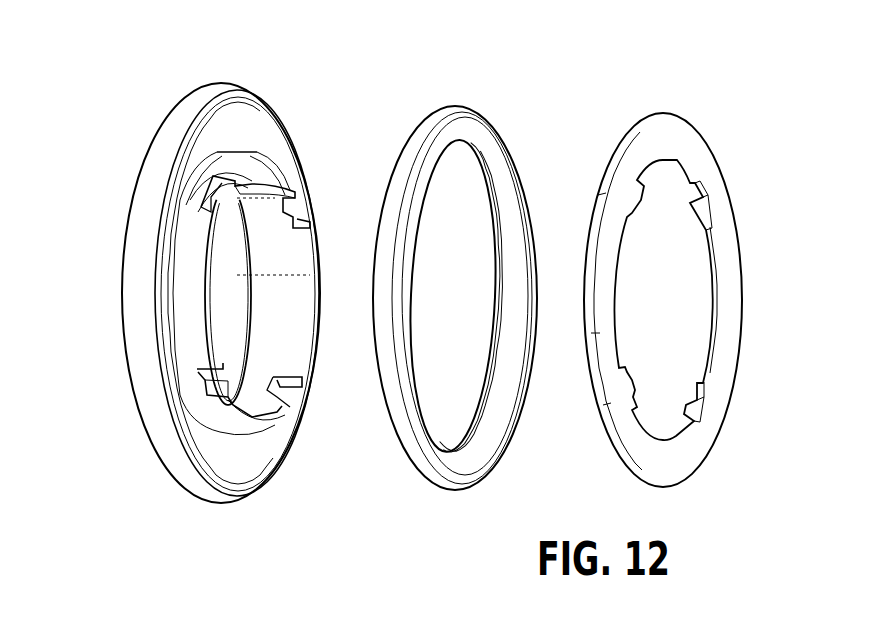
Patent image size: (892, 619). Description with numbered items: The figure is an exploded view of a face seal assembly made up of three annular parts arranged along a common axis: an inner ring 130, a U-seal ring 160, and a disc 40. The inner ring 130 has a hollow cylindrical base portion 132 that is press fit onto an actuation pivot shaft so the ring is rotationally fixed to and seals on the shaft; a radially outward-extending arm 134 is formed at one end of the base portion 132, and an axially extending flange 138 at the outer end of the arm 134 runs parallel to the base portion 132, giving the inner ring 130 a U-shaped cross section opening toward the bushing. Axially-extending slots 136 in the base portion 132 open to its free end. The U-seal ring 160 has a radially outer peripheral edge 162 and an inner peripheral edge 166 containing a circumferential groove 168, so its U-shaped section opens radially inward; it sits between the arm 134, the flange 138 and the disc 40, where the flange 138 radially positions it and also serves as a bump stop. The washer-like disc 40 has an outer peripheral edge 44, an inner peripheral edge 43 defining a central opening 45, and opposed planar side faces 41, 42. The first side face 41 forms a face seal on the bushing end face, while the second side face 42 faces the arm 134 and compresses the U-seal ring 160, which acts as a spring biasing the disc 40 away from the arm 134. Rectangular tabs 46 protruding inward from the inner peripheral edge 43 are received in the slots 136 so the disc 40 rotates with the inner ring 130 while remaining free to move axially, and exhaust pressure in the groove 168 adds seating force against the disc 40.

The inner ring 130 is at (201, 291).
The base portion 132 is at (193, 333).
The arm 134 is at (200, 447).
The slots 136 is at (207, 194).
The flange 138 is at (260, 492).
The U-seal ring 160 is at (470, 262).
The outer peripheral edge 162 is at (438, 113).
The inner peripheral edge 166 is at (517, 393).
The circumferential groove 168 is at (505, 213).
The disc 40 is at (664, 284).
The first side face 41 is at (690, 443).
The second side face 42 is at (608, 433).
The inner peripheral edge 43 is at (712, 247).
The outer peripheral edge 44 is at (613, 150).
The central opening 45 is at (675, 335).
The tabs 46 is at (703, 398).